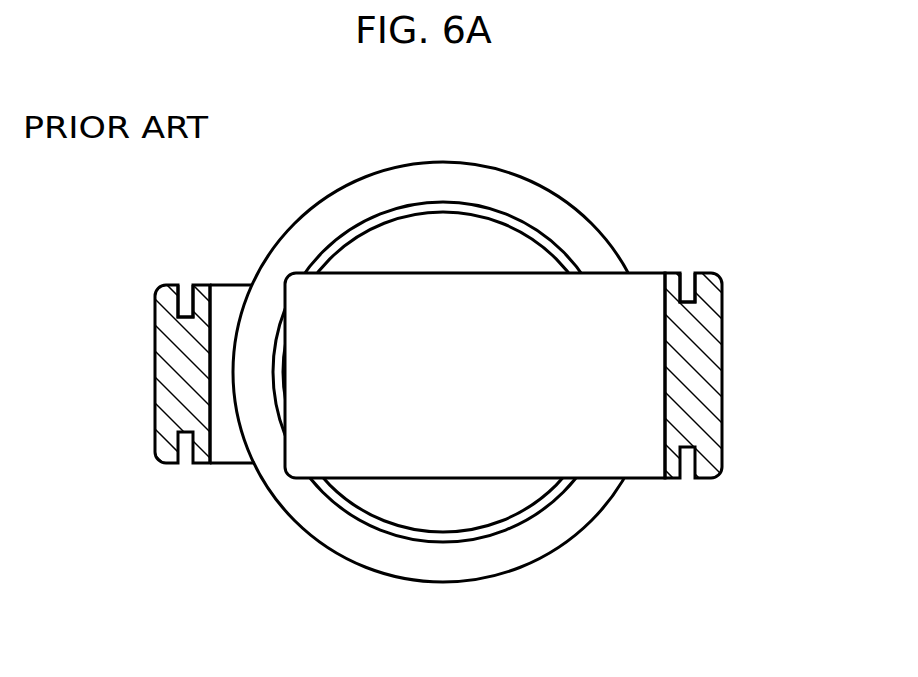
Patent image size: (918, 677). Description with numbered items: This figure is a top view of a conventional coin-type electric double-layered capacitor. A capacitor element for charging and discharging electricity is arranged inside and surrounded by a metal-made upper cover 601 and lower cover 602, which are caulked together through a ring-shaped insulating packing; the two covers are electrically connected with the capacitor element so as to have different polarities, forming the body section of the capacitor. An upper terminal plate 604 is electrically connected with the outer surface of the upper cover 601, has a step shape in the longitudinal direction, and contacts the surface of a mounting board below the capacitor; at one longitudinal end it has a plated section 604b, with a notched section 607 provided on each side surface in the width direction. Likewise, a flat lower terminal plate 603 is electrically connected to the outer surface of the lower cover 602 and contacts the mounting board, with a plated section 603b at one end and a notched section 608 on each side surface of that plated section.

The upper cover 601 is at (392, 247).
The lower cover 602 is at (407, 190).
The lower terminal plate 603 is at (238, 453).
The plated section 603b is at (176, 331).
The upper terminal plate 604 is at (488, 315).
The plated section 604b is at (707, 332).
The notched section 607 is at (695, 283).
The notched section 608 is at (181, 302).